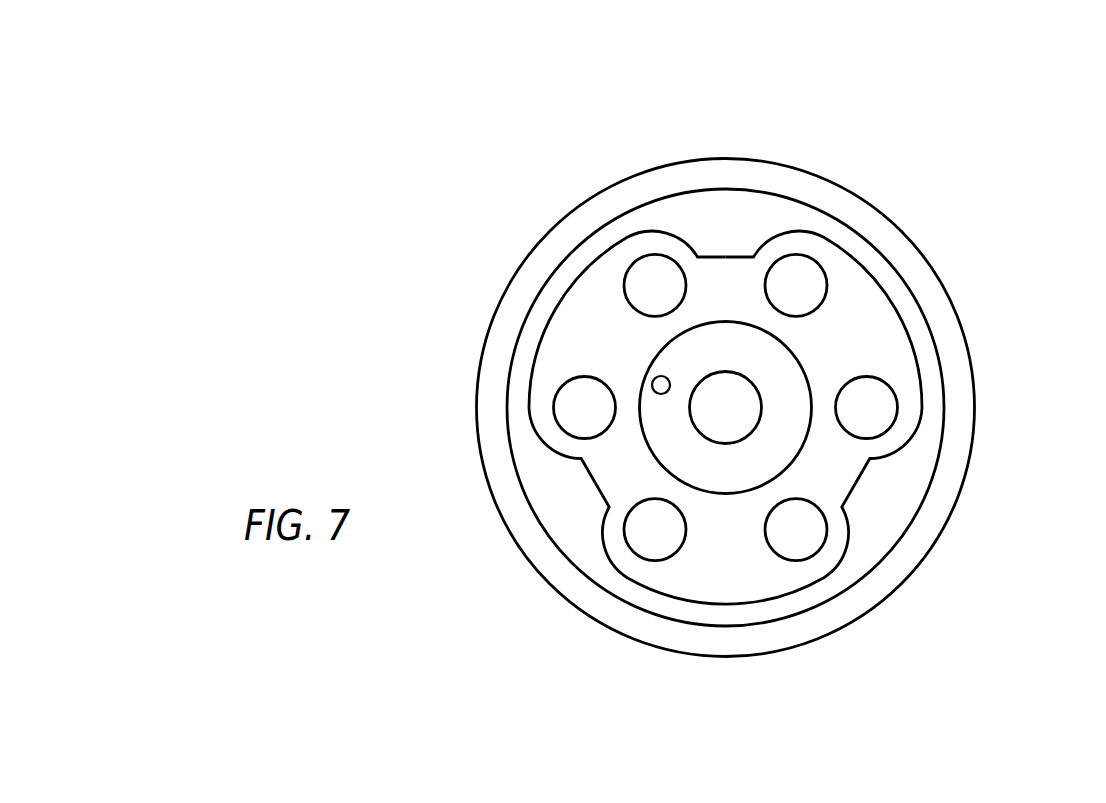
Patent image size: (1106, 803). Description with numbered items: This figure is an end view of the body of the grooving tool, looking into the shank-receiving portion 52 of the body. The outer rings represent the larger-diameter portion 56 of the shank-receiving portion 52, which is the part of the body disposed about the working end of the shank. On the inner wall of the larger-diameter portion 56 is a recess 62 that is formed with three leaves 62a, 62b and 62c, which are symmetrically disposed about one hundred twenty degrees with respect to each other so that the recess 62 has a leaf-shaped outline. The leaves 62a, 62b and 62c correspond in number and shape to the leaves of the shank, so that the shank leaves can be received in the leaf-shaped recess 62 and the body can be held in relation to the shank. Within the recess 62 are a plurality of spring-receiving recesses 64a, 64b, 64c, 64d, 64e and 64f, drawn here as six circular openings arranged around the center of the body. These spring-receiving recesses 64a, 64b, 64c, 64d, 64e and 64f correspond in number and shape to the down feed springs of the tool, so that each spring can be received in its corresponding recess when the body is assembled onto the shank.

The shank-receiving portion 52 is at (877, 88).
The larger-diameter portion 56 is at (967, 338).
The recess 62 is at (865, 333).
The leaf 62a is at (858, 263).
The leaf 62b is at (717, 605).
The leaf 62c is at (558, 303).
The spring-receiving recess 64a is at (652, 255).
The spring-receiving recess 64b is at (558, 387).
The spring-receiving recess 64c is at (637, 557).
The spring-receiving recess 64d is at (815, 558).
The spring-receiving recess 64e is at (897, 408).
The spring-receiving recess 64f is at (799, 253).